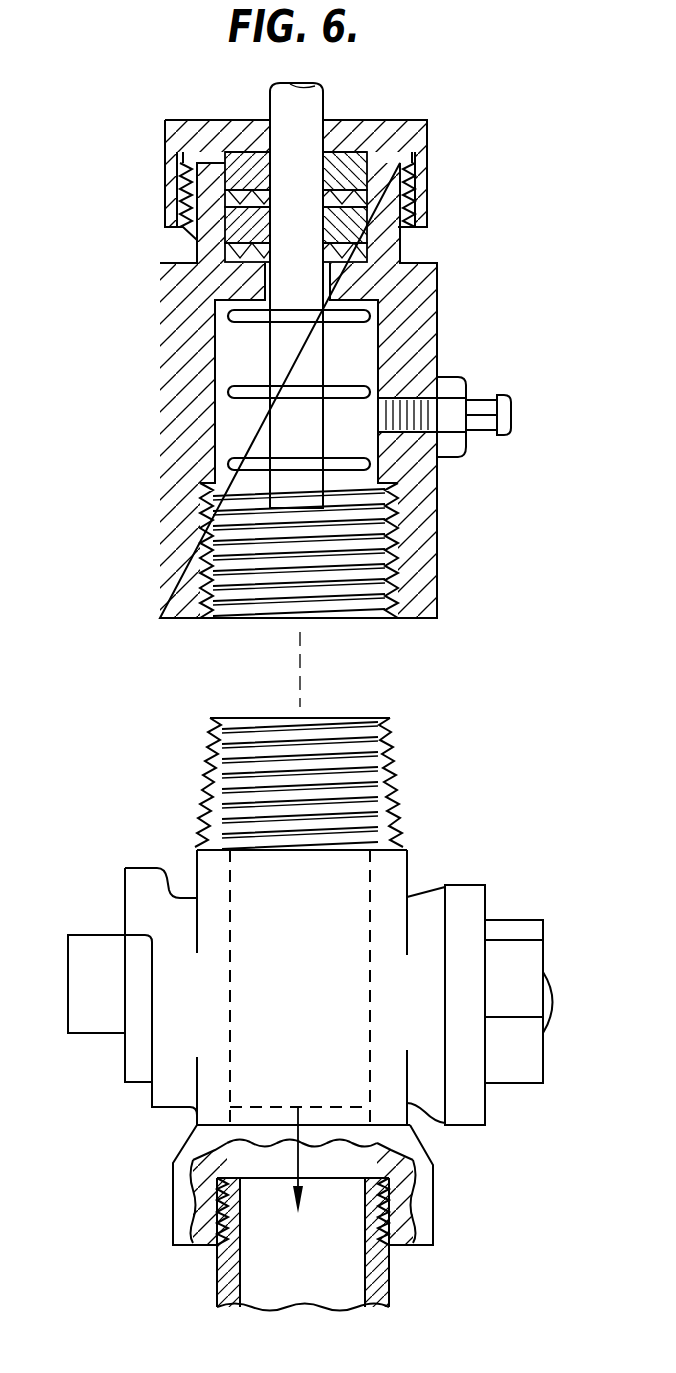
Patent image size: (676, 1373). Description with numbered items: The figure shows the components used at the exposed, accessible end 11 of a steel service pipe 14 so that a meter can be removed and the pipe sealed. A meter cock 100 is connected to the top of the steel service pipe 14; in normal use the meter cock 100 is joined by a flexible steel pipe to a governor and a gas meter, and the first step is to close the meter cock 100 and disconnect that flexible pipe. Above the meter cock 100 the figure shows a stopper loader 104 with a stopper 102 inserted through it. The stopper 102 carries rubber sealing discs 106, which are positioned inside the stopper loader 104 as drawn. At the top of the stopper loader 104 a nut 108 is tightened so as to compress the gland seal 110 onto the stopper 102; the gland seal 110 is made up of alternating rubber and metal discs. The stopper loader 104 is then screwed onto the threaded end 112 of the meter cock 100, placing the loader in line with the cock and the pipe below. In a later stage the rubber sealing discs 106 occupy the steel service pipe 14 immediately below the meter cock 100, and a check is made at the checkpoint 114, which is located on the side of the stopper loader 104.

The meter cock 100 is at (465, 890).
The stopper 102 is at (307, 107).
The stopper loader 104 is at (420, 598).
The rubber sealing discs 106 is at (237, 318).
The nut 108 is at (421, 191).
The gland seal 110 is at (240, 220).
The end of the meter cock 112 is at (393, 780).
The checkpoint 114 is at (480, 397).
The accessible end of the steel service pipe 11 is at (298, 1107).
The steel service pipe 14 is at (378, 1289).